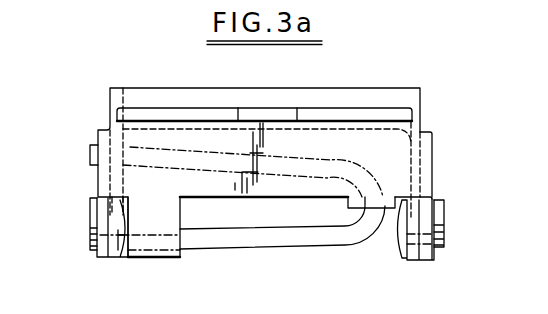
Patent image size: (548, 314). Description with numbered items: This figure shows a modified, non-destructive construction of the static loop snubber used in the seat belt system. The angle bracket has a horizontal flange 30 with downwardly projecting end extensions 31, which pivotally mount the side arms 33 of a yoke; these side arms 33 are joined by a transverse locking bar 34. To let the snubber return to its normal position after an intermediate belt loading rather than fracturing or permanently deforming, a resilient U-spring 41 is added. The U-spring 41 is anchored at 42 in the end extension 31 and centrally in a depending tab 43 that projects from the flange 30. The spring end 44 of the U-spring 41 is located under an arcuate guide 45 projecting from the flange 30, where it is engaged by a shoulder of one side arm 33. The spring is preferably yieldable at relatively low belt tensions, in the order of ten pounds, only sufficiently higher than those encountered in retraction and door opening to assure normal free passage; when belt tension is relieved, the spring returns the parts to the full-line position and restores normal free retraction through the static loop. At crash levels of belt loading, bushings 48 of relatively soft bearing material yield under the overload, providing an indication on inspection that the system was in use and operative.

The horizontal flange 30 is at (385, 160).
The end extensions 31 is at (432, 142).
The transverse locking bar 34 is at (290, 98).
The spring anchorage 42 is at (92, 152).
The bushings 48 is at (100, 198).
The side arms 33 is at (117, 259).
The arcuate guide 45 is at (172, 216).
The spring end 44 is at (199, 242).
The resilient U-spring 41 is at (314, 235).
The depending tab 43 is at (391, 210).